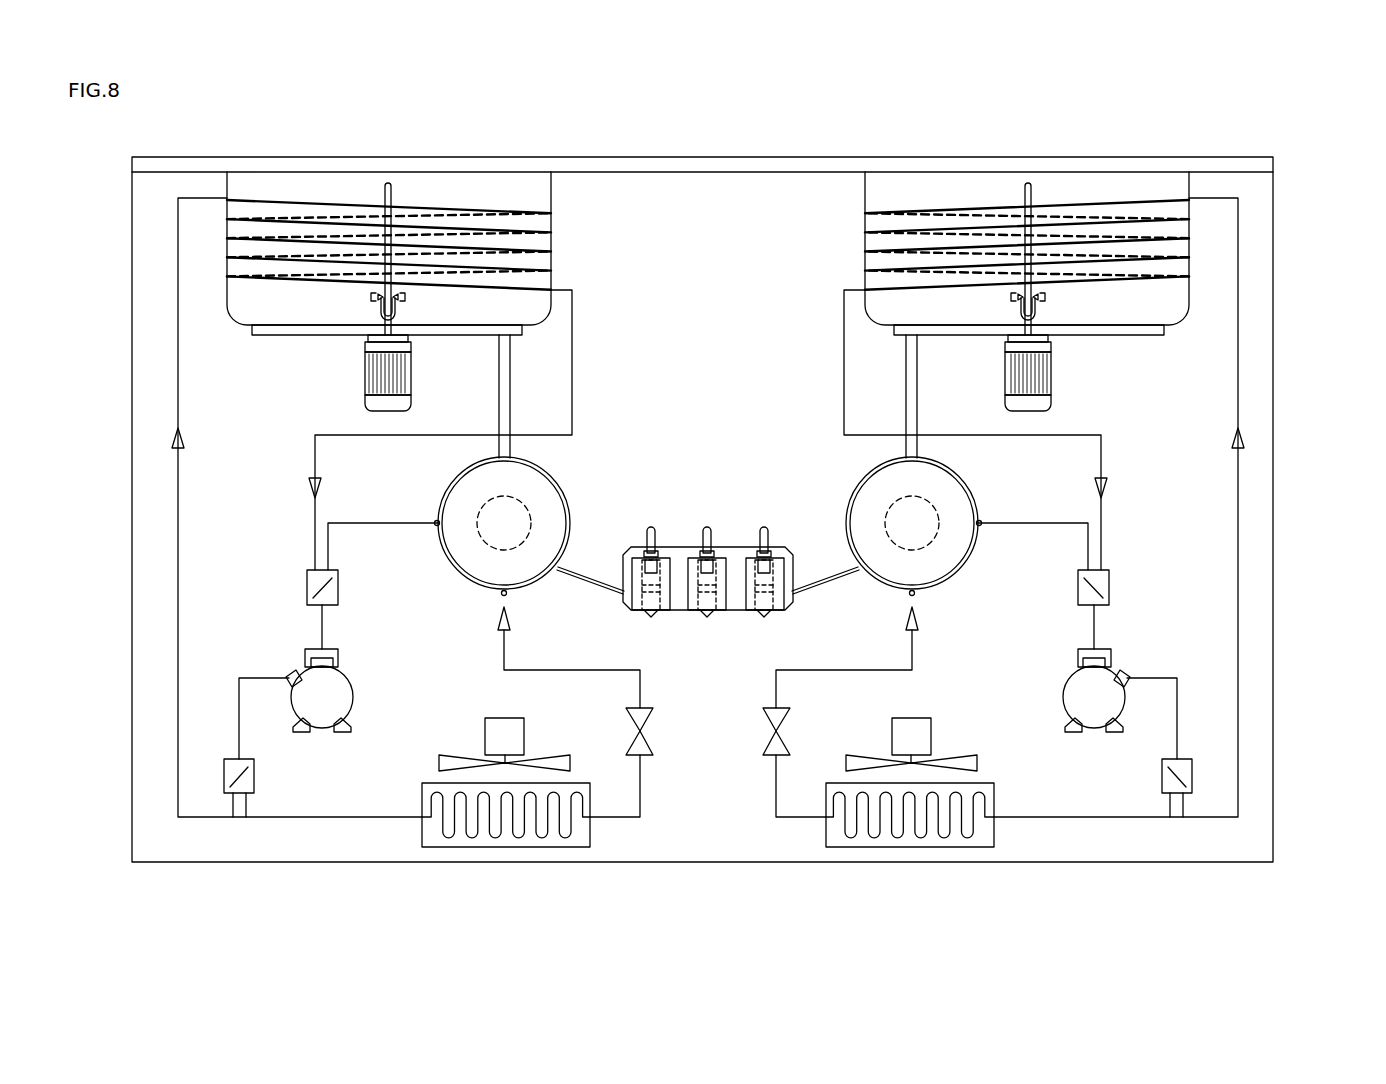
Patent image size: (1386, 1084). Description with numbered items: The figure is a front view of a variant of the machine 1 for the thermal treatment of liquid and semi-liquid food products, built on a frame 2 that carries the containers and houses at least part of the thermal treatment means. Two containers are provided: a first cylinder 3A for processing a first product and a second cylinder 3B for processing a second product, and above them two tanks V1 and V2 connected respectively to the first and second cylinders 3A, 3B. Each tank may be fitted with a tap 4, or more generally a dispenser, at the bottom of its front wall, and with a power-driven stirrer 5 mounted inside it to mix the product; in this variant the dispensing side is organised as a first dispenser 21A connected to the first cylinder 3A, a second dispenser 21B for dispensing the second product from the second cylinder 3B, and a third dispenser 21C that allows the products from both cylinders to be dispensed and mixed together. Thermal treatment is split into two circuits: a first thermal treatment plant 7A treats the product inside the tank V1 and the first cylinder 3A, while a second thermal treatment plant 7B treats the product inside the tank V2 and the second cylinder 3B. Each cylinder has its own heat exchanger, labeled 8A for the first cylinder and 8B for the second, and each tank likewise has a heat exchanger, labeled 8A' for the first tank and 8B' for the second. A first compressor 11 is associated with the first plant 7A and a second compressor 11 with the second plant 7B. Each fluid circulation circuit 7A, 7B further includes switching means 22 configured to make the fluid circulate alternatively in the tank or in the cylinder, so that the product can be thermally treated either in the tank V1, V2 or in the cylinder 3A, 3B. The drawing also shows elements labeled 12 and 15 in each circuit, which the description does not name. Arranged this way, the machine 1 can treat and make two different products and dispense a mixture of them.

The machine 1 is at (724, 127).
The frame 2 is at (1290, 296).
The first cylinder 3A is at (516, 489).
The second cylinder 3B is at (912, 485).
The tap 4 is at (702, 513).
The first dispenser 21A is at (640, 529).
The second dispenser 21B is at (768, 529).
The third dispenser 21C is at (697, 526).
The power-driven stirrer 5 is at (392, 296).
The thermal treatment plant 7A is at (170, 554).
The second thermal treatment plant 7B is at (1246, 548).
The heat exchanger 8A is at (473, 544).
The heat exchanger 8B is at (946, 540).
The heat exchanger 8A' is at (389, 195).
The heat exchanger 8B' is at (1027, 195).
The compressor 11 is at (322, 738).
The expansion valve 12 is at (652, 740).
The condenser with fan 15 is at (485, 854).
The switching means 22 is at (301, 598).
The tank V1 is at (389, 237).
The tank V2 is at (1027, 237).